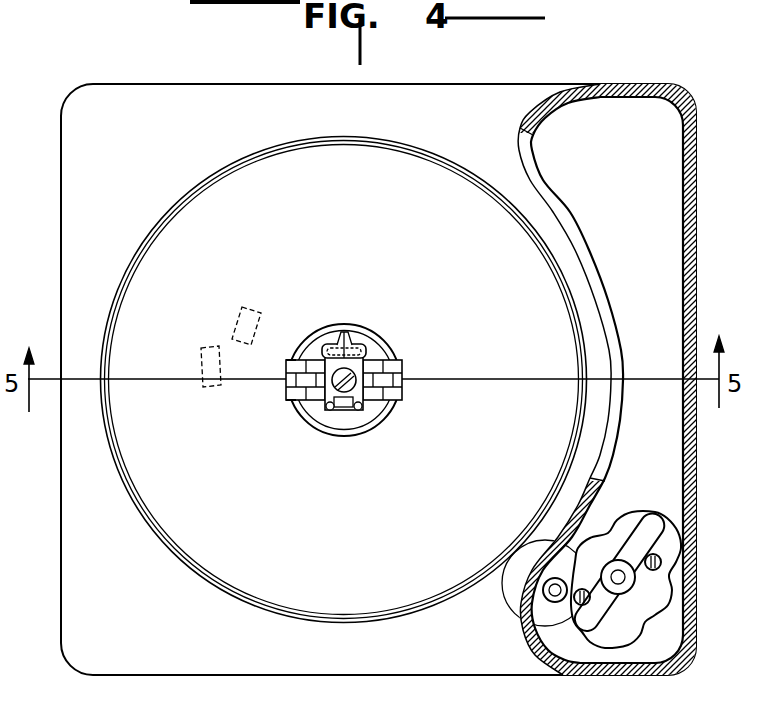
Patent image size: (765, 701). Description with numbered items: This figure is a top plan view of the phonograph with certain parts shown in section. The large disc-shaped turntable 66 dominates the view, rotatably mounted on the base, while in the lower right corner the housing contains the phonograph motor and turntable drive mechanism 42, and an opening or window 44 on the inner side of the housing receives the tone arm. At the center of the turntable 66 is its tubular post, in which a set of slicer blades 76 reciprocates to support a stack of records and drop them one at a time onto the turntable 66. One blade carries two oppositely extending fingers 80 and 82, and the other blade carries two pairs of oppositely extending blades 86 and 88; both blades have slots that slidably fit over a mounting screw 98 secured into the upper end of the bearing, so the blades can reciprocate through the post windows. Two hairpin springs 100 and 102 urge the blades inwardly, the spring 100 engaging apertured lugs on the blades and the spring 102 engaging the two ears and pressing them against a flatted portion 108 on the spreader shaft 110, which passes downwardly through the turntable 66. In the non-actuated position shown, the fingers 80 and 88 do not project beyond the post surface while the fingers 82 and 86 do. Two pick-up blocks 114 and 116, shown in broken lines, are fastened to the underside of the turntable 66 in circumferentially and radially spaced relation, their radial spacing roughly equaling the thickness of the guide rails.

The phonograph motor and turntable drive mechanism 42 is at (637, 620).
The opening or window 44 is at (521, 133).
The turntable 66 is at (172, 204).
The slicer blades 76 is at (357, 347).
The finger 80 is at (286, 383).
The finger 82 is at (404, 379).
The blades 86 is at (287, 362).
The blades 88 is at (400, 366).
The mounting screw 98 is at (337, 391).
The hairpin spring 100 is at (343, 409).
The hairpin spring 102 is at (313, 329).
The flatted portion 108 is at (347, 344).
The spreader shaft 110 is at (344, 340).
The pick-up block 114 is at (202, 355).
The pick-up block 116 is at (238, 313).